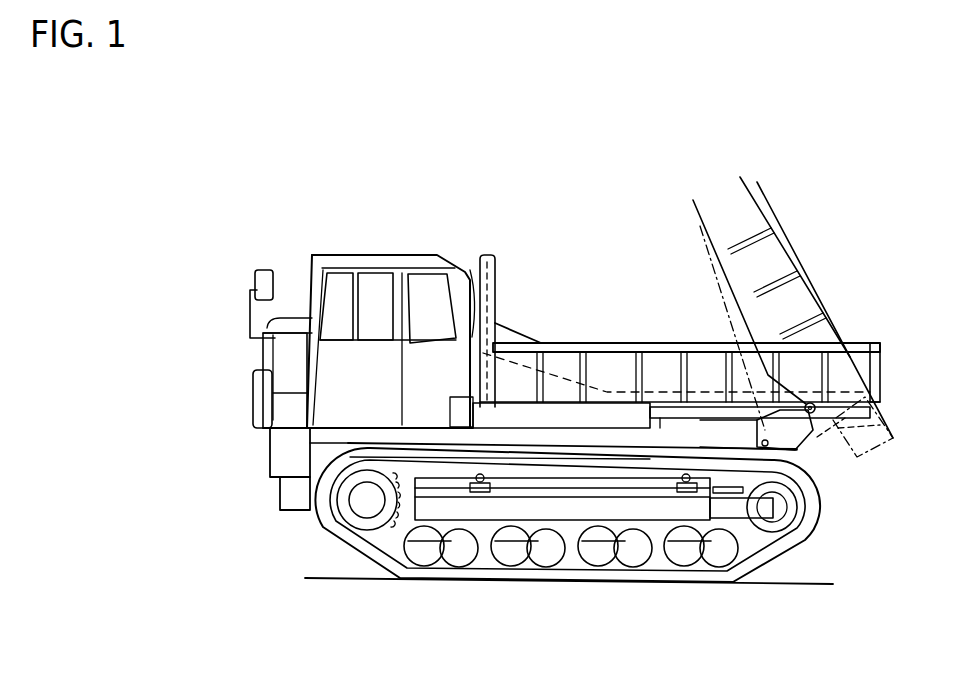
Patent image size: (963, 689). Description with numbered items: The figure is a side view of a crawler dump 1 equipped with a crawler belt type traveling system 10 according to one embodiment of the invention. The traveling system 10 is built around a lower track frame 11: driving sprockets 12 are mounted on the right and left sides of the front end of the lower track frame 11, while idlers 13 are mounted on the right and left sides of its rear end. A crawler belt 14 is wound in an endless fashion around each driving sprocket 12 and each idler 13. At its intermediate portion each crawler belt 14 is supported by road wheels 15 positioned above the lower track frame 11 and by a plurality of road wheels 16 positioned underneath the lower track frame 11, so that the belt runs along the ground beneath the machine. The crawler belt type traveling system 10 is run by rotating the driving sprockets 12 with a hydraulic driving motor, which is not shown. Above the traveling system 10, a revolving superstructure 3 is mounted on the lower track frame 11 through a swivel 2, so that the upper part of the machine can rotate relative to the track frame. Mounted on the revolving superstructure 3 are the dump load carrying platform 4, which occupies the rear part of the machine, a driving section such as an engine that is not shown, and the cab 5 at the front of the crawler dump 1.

The crawler dump 1 is at (300, 222).
The swivel 2 is at (608, 460).
The revolving superstructure 3 is at (348, 440).
The dump load carrying platform 4 is at (716, 345).
The cab 5 is at (402, 282).
The crawler belt type traveling system 10 is at (816, 546).
The lower track frame 11 is at (581, 505).
The driving sprocket 12 is at (397, 533).
The idler 13 is at (766, 530).
The crawler belt 14 is at (818, 502).
The road wheel 15 is at (484, 478).
The road wheels 16 is at (507, 563).